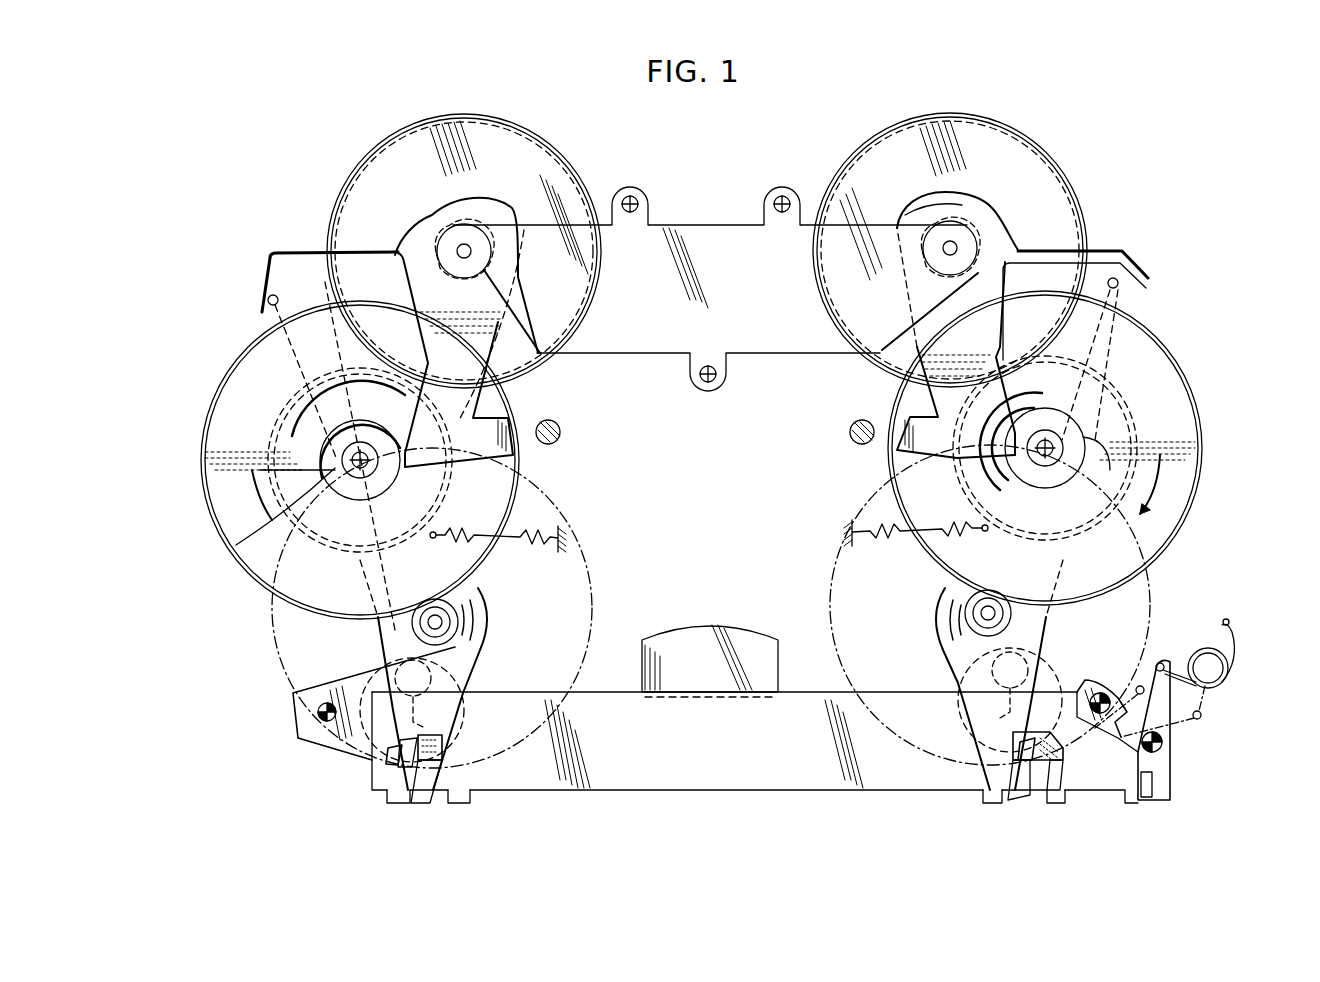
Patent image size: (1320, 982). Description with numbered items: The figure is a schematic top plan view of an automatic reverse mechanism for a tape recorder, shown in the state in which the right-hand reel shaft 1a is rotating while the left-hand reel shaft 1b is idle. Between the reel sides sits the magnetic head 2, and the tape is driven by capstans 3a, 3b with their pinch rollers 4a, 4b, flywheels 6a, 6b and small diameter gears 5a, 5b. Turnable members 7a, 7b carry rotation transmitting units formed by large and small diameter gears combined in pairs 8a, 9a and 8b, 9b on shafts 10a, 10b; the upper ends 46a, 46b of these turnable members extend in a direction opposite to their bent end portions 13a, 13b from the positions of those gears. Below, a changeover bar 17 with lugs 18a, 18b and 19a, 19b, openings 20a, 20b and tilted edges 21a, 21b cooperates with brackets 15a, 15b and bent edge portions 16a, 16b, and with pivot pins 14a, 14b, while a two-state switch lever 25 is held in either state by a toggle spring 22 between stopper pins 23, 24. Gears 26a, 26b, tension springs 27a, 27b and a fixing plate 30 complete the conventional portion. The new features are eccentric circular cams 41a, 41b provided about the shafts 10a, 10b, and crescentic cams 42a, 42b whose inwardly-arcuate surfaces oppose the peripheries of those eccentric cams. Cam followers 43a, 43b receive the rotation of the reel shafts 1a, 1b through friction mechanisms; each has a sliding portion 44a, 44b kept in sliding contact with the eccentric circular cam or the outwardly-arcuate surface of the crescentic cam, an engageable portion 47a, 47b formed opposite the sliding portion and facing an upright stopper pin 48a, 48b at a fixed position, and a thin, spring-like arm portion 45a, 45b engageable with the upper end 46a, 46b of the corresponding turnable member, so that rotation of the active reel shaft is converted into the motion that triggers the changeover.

The reel shaft 1a is at (960, 240).
The reel shaft 1b is at (472, 240).
The magnetic head 2 is at (703, 622).
The capstan 3a is at (965, 612).
The capstan 3b is at (458, 612).
The pinch roller 4a is at (958, 668).
The pinch roller 4b is at (466, 706).
The small diameter gear 5a is at (940, 622).
The small diameter gear 5b is at (480, 636).
The flywheel 6a is at (1152, 584).
The flywheel 6b is at (595, 596).
The turnable member 7a is at (1040, 620).
The turnable member 7b is at (380, 625).
The large diameter gear 8a is at (1172, 350).
The large diameter gear 8b is at (210, 406).
The small diameter gear 9a is at (1125, 385).
The small diameter gear 9b is at (268, 478).
The shaft 10a is at (1070, 440).
The shaft 10b is at (342, 455).
The bent end portion 13a is at (1012, 795).
The bent end portion 13b is at (425, 805).
The pivot pin 14a is at (1104, 693).
The pivot pin 14b is at (318, 716).
The bracket 15a is at (1096, 690).
The bracket 15b is at (293, 696).
The bent edge portion 16a is at (1020, 745).
The bent edge portion 16b is at (390, 766).
The changeover bar 17 is at (740, 795).
The lug 18a is at (1057, 806).
The lug 18b is at (395, 806).
The lug 19a is at (990, 806).
The lug 19b is at (465, 806).
The opening 20a is at (1013, 750).
The opening 20b is at (445, 748).
The tilted edge 21a is at (1065, 755).
The tilted edge 21b is at (396, 752).
The toggle spring 22 is at (1240, 640).
The stopper pin 23 is at (1160, 658).
The stopper pin 24 is at (1200, 719).
The two-state switch lever 25 is at (1172, 660).
The gear 26a is at (1072, 184).
The gear 26b is at (578, 172).
The tension spring 27a is at (850, 532).
The tension spring 27b is at (560, 532).
The fixing plate 30 is at (712, 240).
The eccentric circular cam 41a is at (1090, 440).
The eccentric circular cam 41b is at (330, 485).
The crescentic cam 42a is at (1012, 500).
The crescentic cam 42b is at (318, 392).
The cam follower 43a is at (985, 196).
The cam follower 43b is at (473, 196).
The sliding portion 44a is at (898, 462).
The sliding portion 44b is at (517, 462).
The arm portion 45a is at (1150, 278).
The arm portion 45b is at (262, 268).
The upper end 46a is at (1120, 285).
The upper end 46b is at (266, 300).
The engageable portion 47a is at (890, 438).
The engageable portion 47b is at (510, 432).
The stopper pin 48a is at (850, 432).
The stopper pin 48b is at (562, 432).